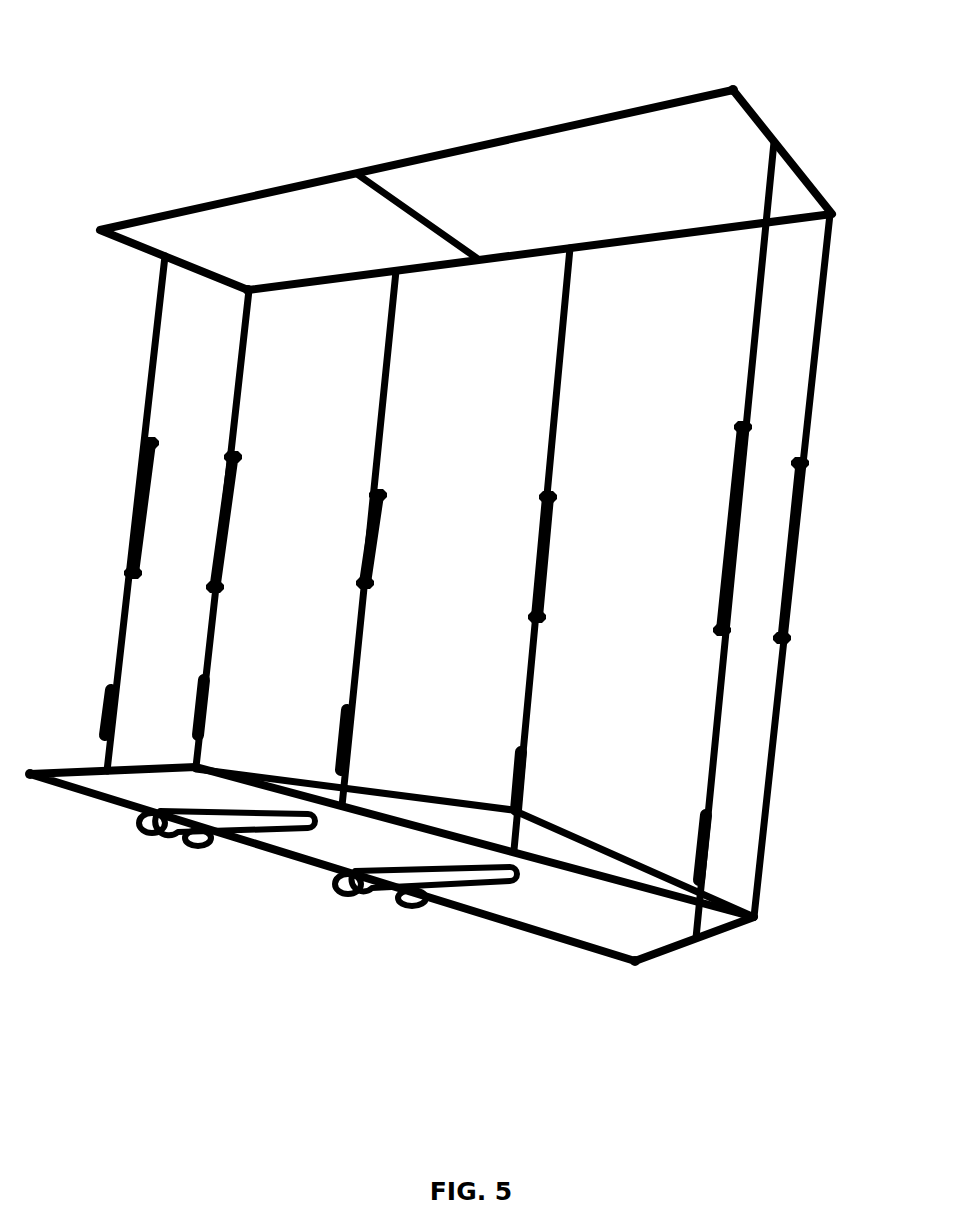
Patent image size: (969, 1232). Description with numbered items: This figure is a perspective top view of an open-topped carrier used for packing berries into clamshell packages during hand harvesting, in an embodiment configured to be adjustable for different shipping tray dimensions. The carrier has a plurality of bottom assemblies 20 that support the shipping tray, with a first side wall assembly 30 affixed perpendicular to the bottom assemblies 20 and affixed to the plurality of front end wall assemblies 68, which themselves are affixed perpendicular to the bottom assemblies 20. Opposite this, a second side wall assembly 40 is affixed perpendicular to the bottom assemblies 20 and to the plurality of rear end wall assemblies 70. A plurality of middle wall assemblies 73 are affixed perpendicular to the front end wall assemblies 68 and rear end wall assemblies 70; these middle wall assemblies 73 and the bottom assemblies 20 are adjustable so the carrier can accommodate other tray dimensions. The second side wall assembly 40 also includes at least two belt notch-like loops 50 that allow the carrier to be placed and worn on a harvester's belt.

The bottom assemblies 20 is at (236, 487).
The first side wall assembly 30 is at (724, 80).
The second side wall assembly 40 is at (633, 982).
The belt notch-like loops 50 is at (475, 897).
The front end wall assemblies 68 is at (193, 258).
The rear end wall assemblies 70 is at (63, 768).
The middle wall assemblies 73 is at (132, 500).